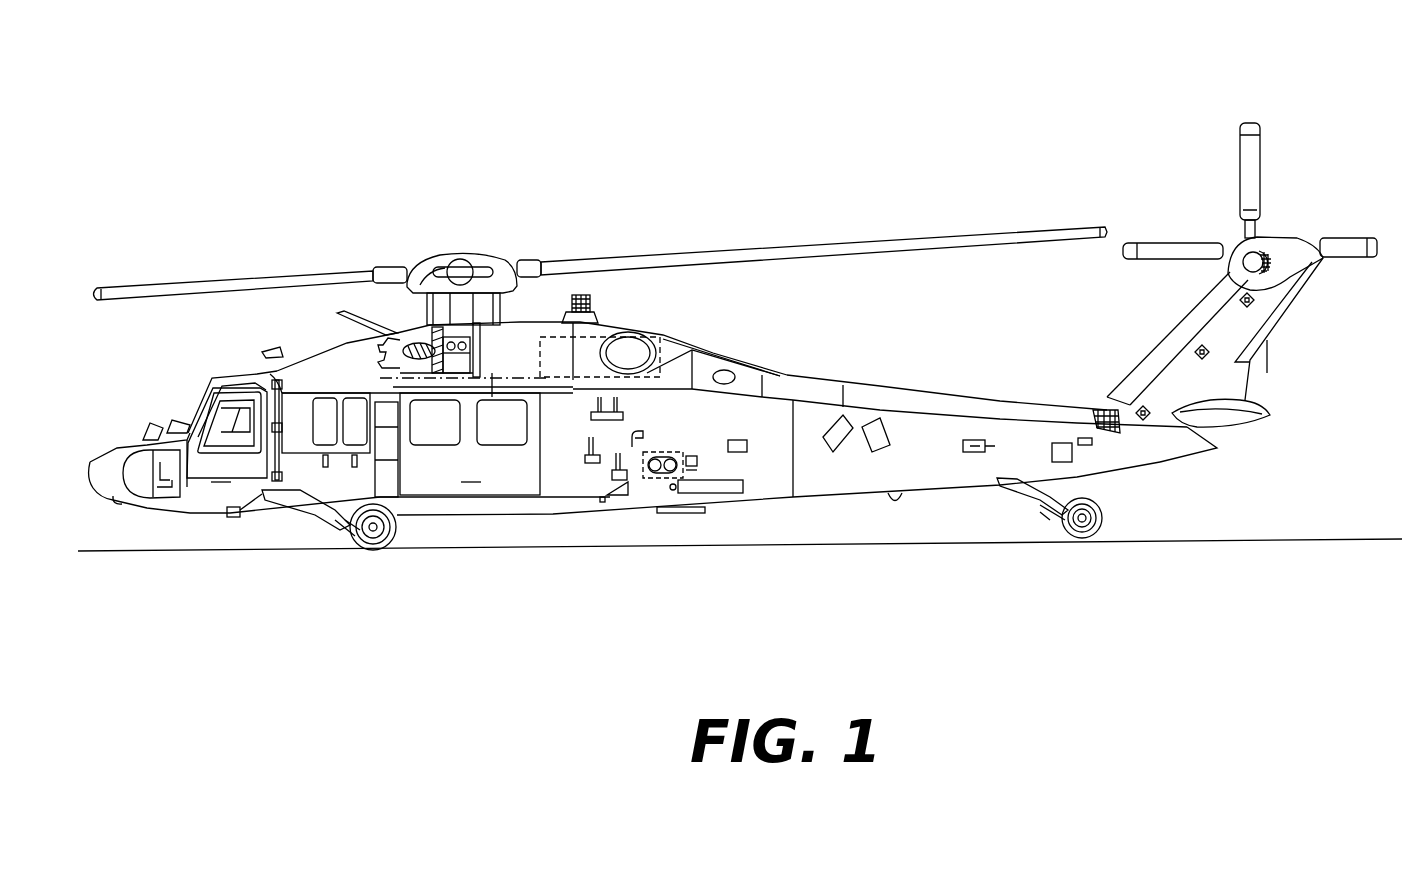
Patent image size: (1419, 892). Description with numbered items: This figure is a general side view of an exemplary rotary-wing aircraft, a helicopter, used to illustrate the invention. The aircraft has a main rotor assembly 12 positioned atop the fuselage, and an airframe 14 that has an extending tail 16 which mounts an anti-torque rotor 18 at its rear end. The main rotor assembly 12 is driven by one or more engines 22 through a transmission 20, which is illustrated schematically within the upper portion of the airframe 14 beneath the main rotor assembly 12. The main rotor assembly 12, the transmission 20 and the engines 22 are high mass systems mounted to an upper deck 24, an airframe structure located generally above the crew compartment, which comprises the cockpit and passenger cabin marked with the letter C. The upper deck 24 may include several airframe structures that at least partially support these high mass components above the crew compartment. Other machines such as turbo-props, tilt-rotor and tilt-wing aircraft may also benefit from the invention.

The main rotor assembly 12 is at (512, 241).
The airframe 14 is at (770, 482).
The extending tail 16 is at (937, 427).
The anti-torque rotor 18 is at (1257, 207).
The transmission 20 is at (525, 372).
The engines 22 is at (613, 328).
The upper deck 24 is at (553, 388).